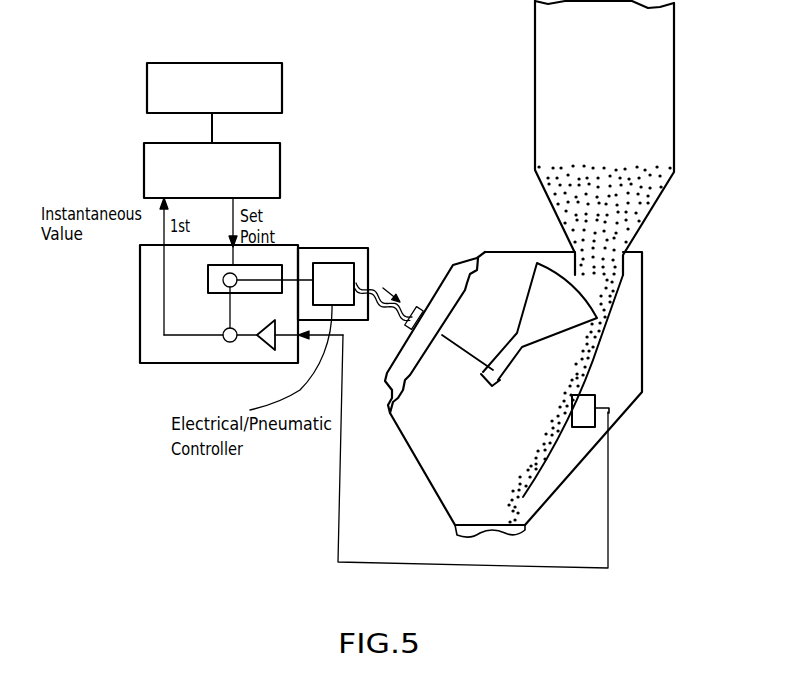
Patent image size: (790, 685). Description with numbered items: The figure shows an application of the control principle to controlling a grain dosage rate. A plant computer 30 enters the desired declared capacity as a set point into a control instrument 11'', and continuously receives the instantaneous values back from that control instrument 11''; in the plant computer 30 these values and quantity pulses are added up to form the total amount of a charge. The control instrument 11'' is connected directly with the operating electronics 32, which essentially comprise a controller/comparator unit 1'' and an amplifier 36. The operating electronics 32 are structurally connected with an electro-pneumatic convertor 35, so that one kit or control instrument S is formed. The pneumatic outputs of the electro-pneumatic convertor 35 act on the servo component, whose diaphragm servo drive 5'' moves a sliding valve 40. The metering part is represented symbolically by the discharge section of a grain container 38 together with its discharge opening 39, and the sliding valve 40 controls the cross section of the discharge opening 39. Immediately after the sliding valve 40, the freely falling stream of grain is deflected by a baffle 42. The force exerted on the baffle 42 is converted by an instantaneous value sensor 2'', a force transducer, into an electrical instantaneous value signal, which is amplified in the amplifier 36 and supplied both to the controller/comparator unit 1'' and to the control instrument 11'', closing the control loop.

The plant computer 30 is at (283, 86).
The control instrument 11'' is at (243, 170).
The operating electronics 32 is at (205, 319).
The controller/comparator unit 1'' is at (233, 277).
The amplifier 36 is at (270, 350).
The electro-pneumatic convertor 35 is at (362, 248).
The control instrument kit S is at (288, 248).
The grain container 38 is at (535, 108).
The discharge opening 39 is at (603, 303).
The sliding valve 40 is at (523, 307).
The servo drive 5'' is at (513, 394).
The instantaneous value sensor 2'' is at (627, 412).
The baffle 42 is at (547, 477).